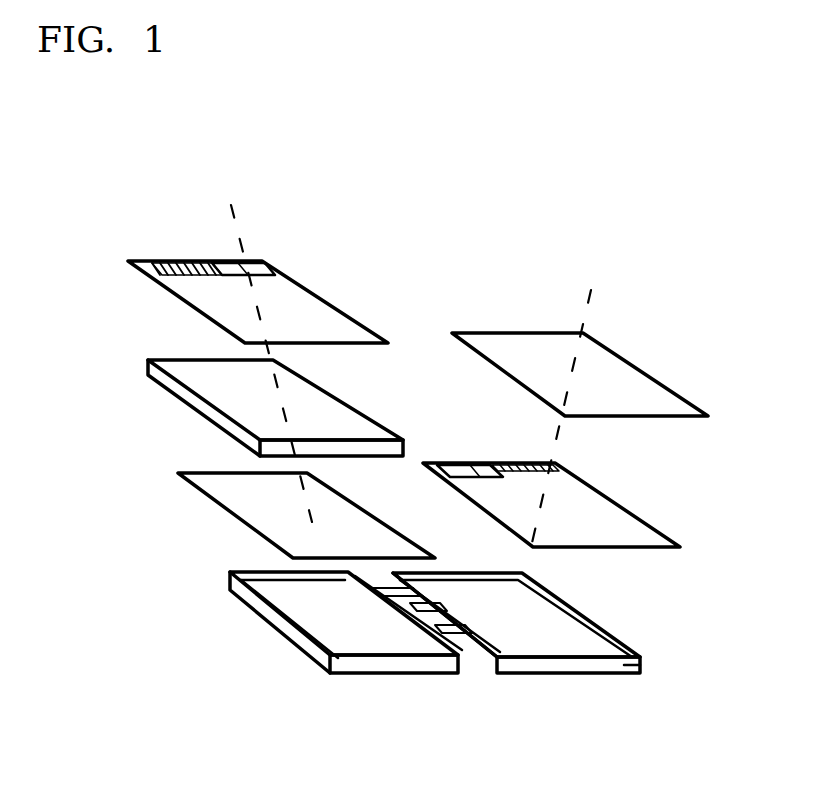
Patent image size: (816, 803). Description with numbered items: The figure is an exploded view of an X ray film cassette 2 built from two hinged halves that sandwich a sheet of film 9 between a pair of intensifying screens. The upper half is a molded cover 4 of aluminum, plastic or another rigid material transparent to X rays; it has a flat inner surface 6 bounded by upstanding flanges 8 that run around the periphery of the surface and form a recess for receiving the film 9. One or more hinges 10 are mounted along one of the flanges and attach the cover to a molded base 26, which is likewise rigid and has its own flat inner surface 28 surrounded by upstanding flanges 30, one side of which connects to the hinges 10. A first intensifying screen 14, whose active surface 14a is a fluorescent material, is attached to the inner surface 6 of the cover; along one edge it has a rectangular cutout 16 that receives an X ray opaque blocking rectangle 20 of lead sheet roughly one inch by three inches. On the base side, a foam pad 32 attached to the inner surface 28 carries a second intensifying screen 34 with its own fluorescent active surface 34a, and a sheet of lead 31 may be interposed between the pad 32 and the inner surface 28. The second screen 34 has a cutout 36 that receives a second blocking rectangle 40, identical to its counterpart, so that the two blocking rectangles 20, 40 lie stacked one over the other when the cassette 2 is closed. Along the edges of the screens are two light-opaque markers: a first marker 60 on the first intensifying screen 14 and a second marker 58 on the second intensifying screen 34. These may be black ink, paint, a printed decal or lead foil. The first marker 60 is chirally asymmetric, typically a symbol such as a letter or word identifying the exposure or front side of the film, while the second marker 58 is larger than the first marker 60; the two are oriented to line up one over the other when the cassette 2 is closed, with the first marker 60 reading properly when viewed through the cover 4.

The X ray film cassette 2 is at (425, 687).
The molded cover 4 is at (537, 673).
The flat inner surface 6 is at (523, 575).
The upstanding flanges 8 is at (642, 664).
The sheet of film 9 is at (580, 374).
The hinges 10 is at (463, 640).
The first intensifying screen 14 is at (582, 482).
The active surface 14a is at (536, 452).
The rectangular cutout 16 is at (448, 462).
The blocking rectangle 20 is at (477, 466).
The molded base 26 is at (375, 673).
The flat inner surface 28 is at (332, 574).
The upstanding flanges 30 is at (263, 617).
The sheet of lead 31 is at (306, 515).
The foam pad 32 is at (275, 408).
The second intensifying screen 34 is at (177, 306).
The active surface 34a is at (217, 259).
The cutout 36 is at (214, 262).
The blocking rectangle 40 is at (228, 262).
The second marker 58 is at (173, 258).
The first marker 60 is at (537, 462).